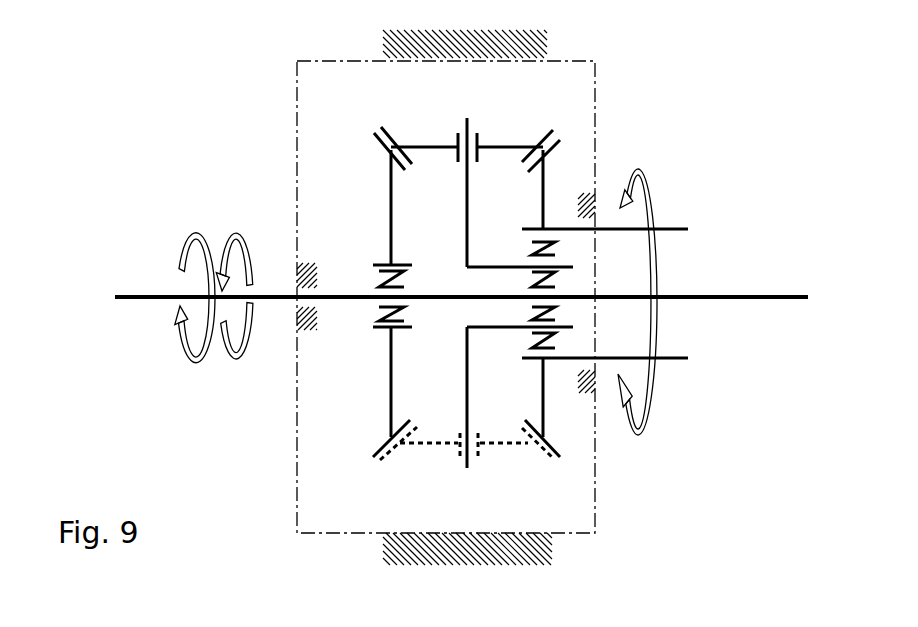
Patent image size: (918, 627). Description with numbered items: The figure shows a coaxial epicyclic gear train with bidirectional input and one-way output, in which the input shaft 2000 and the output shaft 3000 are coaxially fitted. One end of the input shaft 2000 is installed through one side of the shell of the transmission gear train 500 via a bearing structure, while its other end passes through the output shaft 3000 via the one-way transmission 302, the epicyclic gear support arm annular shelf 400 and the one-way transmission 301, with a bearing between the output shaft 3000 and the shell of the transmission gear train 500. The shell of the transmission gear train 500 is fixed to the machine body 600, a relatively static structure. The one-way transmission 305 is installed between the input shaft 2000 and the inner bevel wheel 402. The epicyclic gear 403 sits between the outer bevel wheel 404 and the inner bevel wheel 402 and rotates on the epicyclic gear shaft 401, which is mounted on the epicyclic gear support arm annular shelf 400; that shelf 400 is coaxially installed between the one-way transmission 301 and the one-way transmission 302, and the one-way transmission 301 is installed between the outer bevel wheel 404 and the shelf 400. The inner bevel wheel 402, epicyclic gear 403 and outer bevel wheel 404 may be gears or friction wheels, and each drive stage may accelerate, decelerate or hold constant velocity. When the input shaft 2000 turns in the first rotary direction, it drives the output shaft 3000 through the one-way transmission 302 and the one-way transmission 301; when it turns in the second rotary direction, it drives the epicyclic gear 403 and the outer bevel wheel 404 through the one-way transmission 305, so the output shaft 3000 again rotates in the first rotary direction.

The shell of the transmission gear train 500 is at (295, 132).
The machine body 600 is at (462, 53).
The input shaft 2000 is at (165, 293).
The output shaft 3000 is at (665, 227).
The epicyclic gear support arm annular shelf 400 is at (465, 250).
The epicyclic gear shaft 401 is at (472, 123).
The inner bevel wheel 402 is at (385, 152).
The epicyclic gear 403 is at (390, 137).
The outer bevel wheel 404 is at (553, 148).
The one-way transmission 305 is at (360, 270).
The one-way transmission 301 is at (522, 242).
The one-way transmission 302 is at (562, 305).